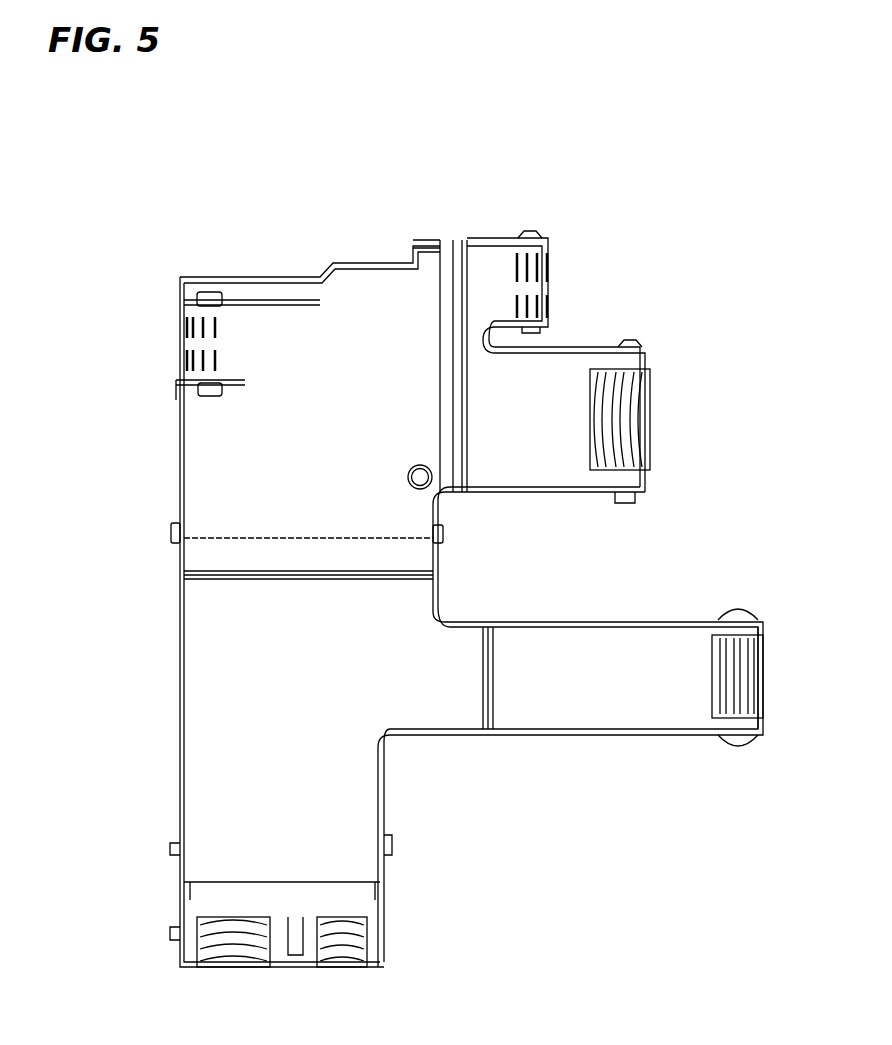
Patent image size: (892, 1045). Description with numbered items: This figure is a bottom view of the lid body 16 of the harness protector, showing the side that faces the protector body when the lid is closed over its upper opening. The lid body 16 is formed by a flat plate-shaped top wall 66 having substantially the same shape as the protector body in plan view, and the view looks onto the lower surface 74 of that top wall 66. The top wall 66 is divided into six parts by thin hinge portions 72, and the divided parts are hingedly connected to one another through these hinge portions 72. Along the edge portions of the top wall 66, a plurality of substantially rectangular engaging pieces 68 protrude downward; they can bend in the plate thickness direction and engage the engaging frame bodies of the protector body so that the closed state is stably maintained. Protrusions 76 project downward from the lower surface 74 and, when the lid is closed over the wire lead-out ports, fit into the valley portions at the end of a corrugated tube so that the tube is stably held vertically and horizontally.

The lid body 16 is at (456, 172).
The top wall 66 is at (357, 238).
The engaging pieces 68 is at (210, 297).
The hinge portions 72 is at (462, 494).
The lower surface 74 is at (253, 692).
The protrusions 76 is at (193, 325).